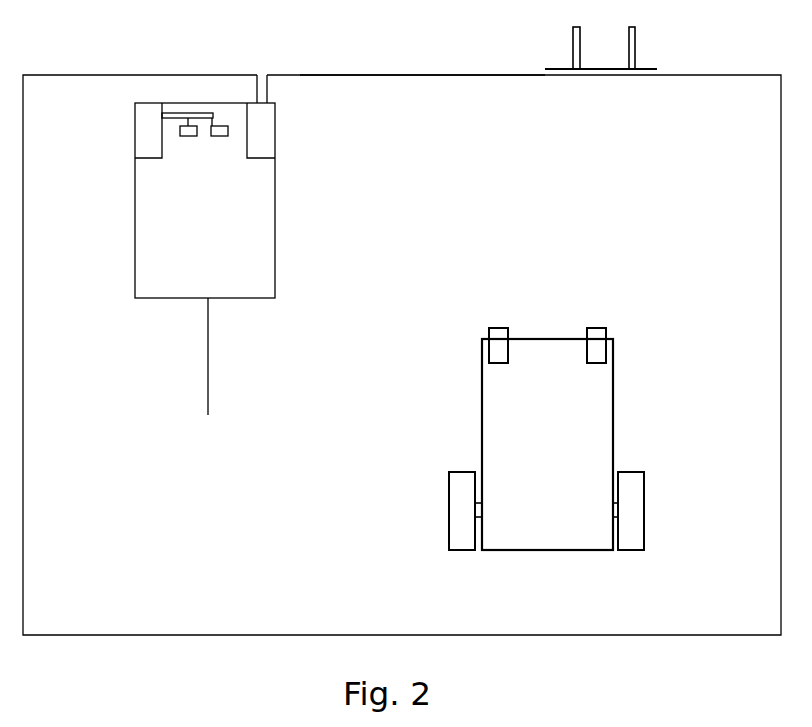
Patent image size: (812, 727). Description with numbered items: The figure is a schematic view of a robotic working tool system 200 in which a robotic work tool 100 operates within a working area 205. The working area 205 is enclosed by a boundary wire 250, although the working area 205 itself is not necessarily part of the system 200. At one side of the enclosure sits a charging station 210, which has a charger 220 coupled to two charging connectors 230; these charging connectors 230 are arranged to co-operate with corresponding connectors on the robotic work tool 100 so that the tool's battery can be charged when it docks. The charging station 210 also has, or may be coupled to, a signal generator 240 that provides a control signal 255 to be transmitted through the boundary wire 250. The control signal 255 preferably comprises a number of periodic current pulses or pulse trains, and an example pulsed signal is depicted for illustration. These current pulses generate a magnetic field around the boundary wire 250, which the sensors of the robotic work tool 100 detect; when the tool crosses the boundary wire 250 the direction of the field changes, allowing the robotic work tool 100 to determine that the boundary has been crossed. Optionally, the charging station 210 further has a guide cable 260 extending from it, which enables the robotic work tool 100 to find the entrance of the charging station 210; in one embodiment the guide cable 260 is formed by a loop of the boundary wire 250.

The robotic work tool 100 is at (613, 463).
The robotic working tool system 200 is at (126, 86).
The working area 205 is at (132, 614).
The charging station 210 is at (135, 160).
The charger 220 is at (147, 112).
The charging connectors 230 is at (193, 125).
The signal generator 240 is at (276, 153).
The boundary wire 250 is at (460, 75).
The control signal 255 is at (635, 52).
The guide cable 260 is at (210, 393).